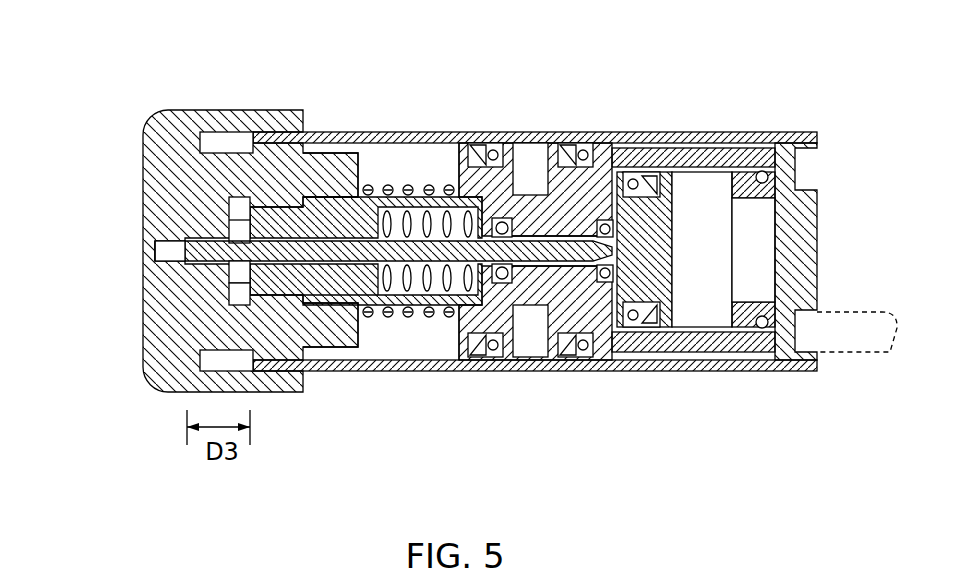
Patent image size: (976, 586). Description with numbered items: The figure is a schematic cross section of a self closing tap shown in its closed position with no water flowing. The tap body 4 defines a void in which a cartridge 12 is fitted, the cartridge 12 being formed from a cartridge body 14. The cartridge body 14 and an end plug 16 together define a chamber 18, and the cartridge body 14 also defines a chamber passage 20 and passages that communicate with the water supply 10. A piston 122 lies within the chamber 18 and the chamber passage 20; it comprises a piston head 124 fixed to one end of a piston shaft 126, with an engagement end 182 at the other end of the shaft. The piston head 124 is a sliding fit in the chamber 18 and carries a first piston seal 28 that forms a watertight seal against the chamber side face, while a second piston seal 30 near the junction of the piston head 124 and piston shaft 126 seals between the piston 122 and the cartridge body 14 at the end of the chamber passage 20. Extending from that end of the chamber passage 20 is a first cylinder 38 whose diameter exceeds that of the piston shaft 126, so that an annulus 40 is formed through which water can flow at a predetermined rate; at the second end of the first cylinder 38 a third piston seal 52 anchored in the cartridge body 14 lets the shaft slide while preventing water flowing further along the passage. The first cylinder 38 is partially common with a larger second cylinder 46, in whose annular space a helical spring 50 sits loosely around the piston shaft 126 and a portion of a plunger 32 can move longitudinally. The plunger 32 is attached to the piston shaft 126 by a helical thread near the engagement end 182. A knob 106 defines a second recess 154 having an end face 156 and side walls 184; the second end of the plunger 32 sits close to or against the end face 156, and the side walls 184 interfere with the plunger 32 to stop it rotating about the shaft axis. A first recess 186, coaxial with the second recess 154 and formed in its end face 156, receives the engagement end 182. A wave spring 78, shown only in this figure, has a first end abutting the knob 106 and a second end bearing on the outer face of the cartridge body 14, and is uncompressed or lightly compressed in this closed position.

The tap body 4 is at (407, 372).
The water supply 10 is at (855, 312).
The cartridge 12 is at (666, 352).
The cartridge body 14 is at (572, 352).
The end plug 16 is at (790, 215).
The chamber 18 is at (703, 290).
The chamber passage 20 is at (460, 360).
The first piston seal 28 is at (640, 178).
The second piston seal 30 is at (600, 222).
The plunger 32 is at (333, 253).
The first cylinder 38 is at (525, 160).
The annulus 40 is at (570, 215).
The second cylinder 46 is at (355, 165).
The helical spring 50 is at (415, 212).
The third piston seal 52 is at (497, 222).
The wave spring 78 is at (390, 187).
The knob 106 is at (233, 110).
The piston 122 is at (230, 202).
The piston head 124 is at (735, 185).
The piston shaft 126 is at (378, 294).
The second recess 154 is at (222, 297).
The end face 156 is at (230, 272).
The engagement end 182 is at (183, 255).
The side walls 184 is at (195, 140).
The first recess 186 is at (153, 248).